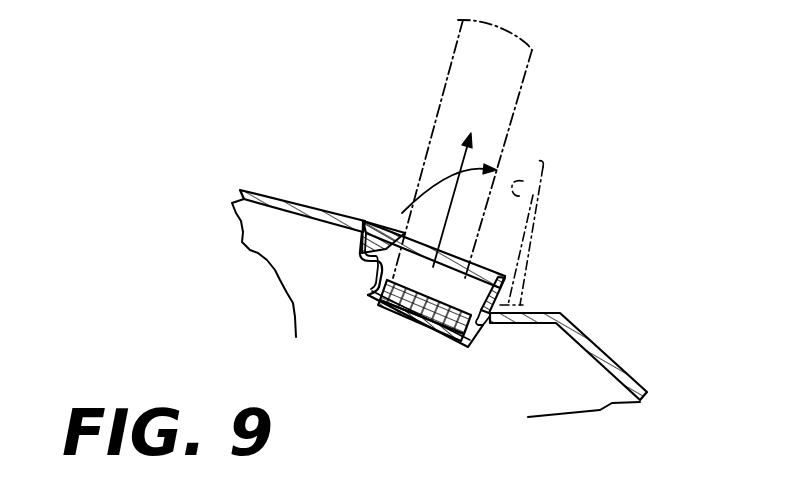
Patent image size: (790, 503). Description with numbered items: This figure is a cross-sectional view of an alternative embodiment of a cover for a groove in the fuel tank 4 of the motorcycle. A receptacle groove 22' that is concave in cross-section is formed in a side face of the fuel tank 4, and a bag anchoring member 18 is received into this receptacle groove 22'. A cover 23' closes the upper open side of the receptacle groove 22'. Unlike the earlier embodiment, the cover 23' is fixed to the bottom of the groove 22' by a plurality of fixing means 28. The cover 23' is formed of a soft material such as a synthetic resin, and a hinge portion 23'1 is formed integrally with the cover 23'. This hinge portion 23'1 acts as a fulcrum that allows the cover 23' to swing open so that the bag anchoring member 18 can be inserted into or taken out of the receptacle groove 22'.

The bag anchoring member 18 is at (517, 97).
The cover 23' is at (474, 244).
The receptacle groove 22' is at (388, 318).
The fixing means 28 is at (392, 316).
The hinge portion 23'1 is at (437, 352).
The fuel tank 4 is at (593, 341).